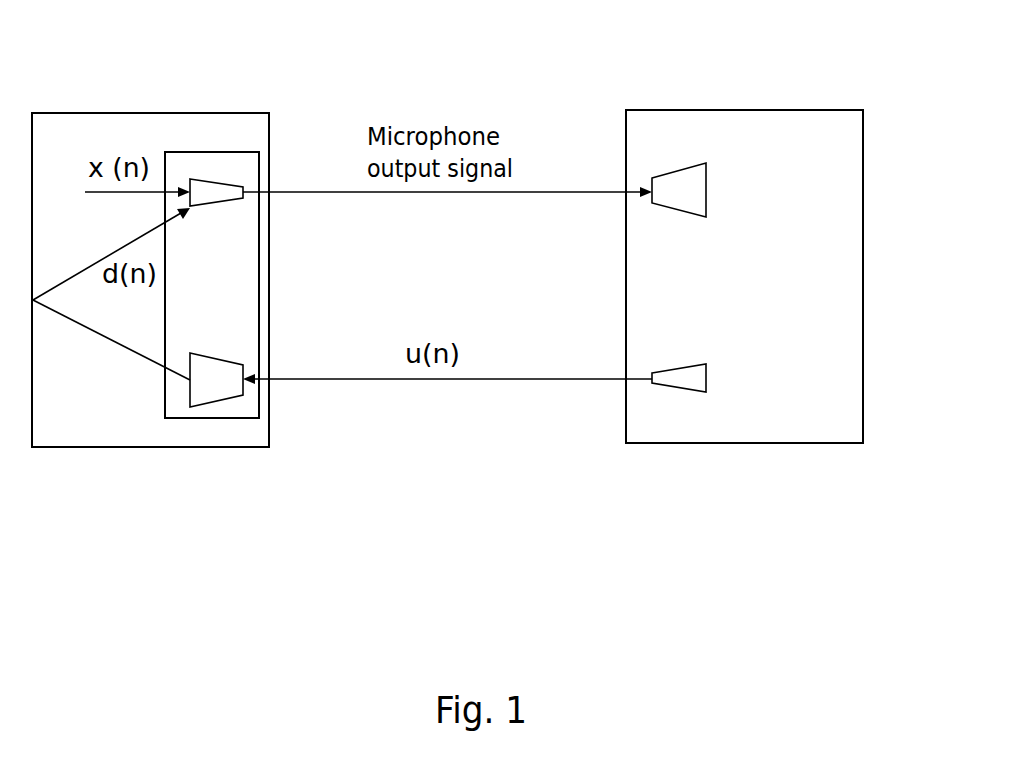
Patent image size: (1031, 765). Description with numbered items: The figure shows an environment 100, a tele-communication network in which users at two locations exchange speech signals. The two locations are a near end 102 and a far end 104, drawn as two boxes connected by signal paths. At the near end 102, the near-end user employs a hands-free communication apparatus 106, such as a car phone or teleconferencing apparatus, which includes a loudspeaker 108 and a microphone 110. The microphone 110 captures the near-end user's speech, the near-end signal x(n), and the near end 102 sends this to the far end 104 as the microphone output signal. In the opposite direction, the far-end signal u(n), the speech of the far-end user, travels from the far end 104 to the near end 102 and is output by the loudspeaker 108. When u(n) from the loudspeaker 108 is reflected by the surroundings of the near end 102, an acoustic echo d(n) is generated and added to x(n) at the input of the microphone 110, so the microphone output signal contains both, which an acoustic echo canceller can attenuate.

The environment 100 is at (924, 558).
The near end 102 is at (151, 113).
The far end 104 is at (744, 110).
The hands-free communication apparatus 106 is at (217, 152).
The loudspeaker 108 is at (203, 353).
The microphone 110 is at (220, 203).